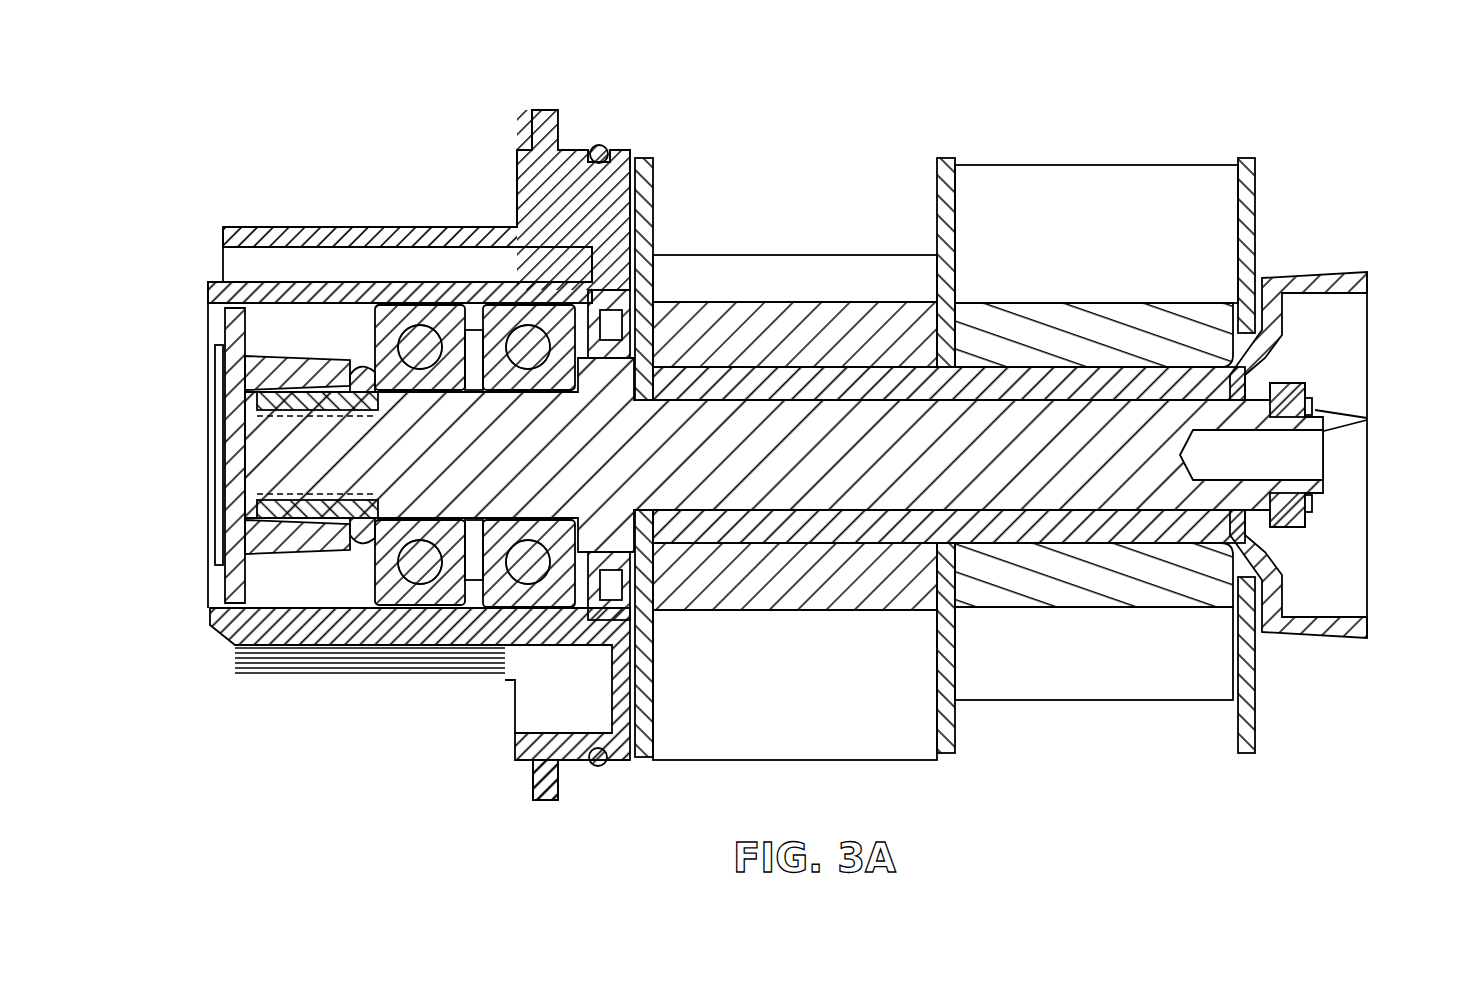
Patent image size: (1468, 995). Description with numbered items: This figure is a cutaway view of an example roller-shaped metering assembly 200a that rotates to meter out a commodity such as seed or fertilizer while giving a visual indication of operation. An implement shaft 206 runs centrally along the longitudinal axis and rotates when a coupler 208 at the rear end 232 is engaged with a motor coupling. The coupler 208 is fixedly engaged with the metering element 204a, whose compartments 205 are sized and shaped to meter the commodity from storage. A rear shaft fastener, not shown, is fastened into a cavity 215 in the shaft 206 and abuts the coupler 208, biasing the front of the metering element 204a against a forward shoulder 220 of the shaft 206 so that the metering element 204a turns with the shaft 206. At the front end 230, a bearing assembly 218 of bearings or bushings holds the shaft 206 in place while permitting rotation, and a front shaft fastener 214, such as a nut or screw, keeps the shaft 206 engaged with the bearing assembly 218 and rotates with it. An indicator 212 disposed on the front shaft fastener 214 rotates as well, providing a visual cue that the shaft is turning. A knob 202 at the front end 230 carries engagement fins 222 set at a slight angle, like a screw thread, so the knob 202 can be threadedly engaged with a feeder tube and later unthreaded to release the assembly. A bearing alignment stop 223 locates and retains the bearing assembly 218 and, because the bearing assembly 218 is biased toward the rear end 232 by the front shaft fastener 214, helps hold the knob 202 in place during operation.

The metering assembly 200a is at (235, 126).
The knob 202 is at (572, 155).
The metering element 204a is at (990, 163).
The compartments 205 is at (855, 186).
The implement shaft 206 is at (1090, 408).
The coupler 208 is at (1352, 441).
The indicator 212 is at (209, 360).
The front shaft fastener 214 is at (355, 520).
The cavity 215 is at (1310, 438).
The bearing assembly 218 is at (435, 288).
The forward shoulder 220 is at (655, 368).
The engagement fins 222 is at (545, 803).
The bearing alignment stop 223 is at (477, 320).
The front end 230 is at (180, 410).
The rear end 232 is at (1362, 246).